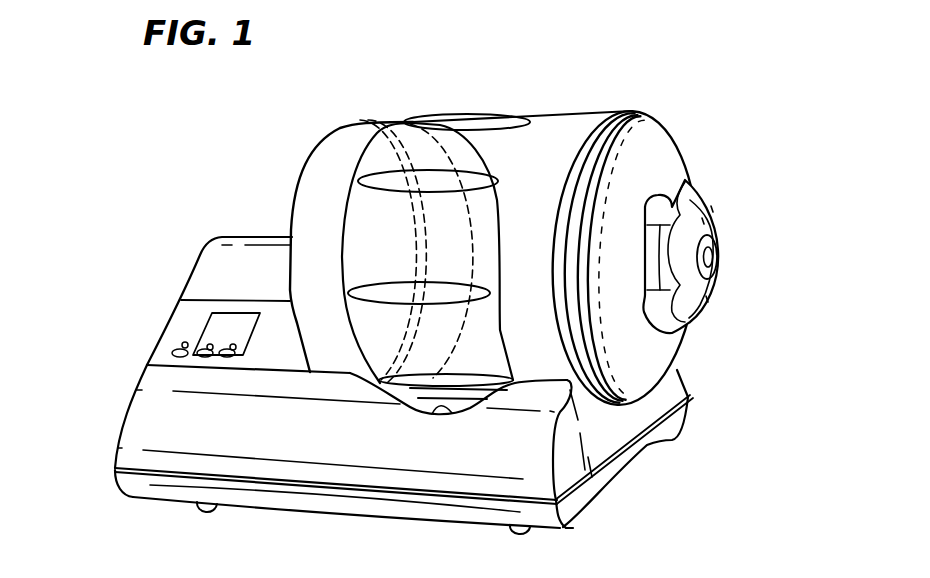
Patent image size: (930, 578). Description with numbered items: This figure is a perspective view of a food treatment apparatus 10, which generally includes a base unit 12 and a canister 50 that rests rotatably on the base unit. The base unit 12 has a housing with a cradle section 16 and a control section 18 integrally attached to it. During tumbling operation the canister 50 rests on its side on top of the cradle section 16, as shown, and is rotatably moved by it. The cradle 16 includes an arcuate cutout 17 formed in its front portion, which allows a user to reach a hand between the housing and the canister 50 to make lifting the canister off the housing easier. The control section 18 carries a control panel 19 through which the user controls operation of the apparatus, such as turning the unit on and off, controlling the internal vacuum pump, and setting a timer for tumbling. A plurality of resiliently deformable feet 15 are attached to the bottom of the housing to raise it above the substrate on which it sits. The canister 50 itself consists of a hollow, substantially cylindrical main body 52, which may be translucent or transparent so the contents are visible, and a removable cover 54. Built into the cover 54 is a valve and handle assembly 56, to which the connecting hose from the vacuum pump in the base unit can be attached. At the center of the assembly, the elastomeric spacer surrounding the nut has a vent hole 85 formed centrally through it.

The food treatment apparatus 10 is at (207, 163).
The base unit 12 is at (113, 423).
The resiliently deformable feet 15 is at (197, 503).
The cradle section 16 is at (700, 391).
The arcuate cutout 17 is at (430, 411).
The control section 18 is at (172, 257).
The control panel 19 is at (193, 325).
The canister 50 is at (579, 103).
The main body 52 is at (320, 172).
The removable cover 54 is at (653, 147).
The valve and handle assembly 56 is at (733, 212).
The vent hole 85 is at (712, 257).